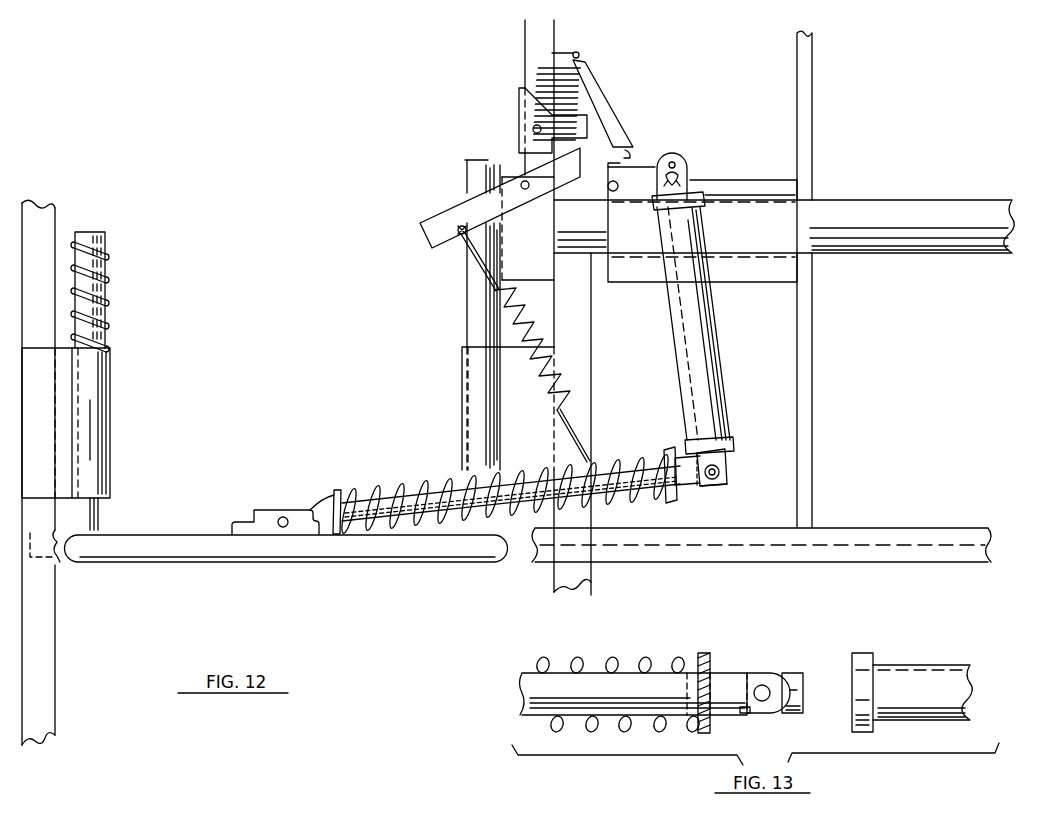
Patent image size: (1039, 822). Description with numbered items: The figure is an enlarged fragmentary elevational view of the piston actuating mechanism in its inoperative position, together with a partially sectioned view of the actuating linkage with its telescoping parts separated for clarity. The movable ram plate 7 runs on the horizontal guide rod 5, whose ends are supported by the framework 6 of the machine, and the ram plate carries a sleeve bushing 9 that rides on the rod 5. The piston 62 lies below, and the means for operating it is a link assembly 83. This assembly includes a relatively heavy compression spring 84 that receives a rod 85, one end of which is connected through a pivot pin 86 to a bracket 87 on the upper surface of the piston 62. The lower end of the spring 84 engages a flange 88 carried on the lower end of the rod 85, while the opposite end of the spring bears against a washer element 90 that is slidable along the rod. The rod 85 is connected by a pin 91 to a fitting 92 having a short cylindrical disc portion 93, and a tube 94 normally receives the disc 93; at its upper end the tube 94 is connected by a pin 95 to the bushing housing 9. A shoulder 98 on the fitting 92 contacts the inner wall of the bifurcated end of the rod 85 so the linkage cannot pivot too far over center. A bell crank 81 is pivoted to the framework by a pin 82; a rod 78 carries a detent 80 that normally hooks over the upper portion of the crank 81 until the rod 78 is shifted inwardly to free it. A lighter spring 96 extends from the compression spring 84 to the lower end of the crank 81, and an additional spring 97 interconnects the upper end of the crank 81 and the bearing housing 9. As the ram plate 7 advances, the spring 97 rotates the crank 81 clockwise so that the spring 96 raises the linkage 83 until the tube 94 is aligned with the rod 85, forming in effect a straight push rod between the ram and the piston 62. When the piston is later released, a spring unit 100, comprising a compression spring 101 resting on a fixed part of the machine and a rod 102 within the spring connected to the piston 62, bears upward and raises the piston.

In FIG. 12, the guide rod 5 is at (880, 213).
In FIG. 12, the framework 6 is at (532, 260).
In FIG. 12, the ram plate 7 is at (803, 87).
In FIG. 12, the sleeve bushing 9 is at (740, 178).
In FIG. 12, the piston 62 is at (208, 547).
In FIG. 12, the rod 78 is at (533, 128).
In FIG. 12, the detent 80 is at (532, 105).
In FIG. 12, the bell crank 81 is at (455, 198).
In FIG. 12, the pin 82 is at (525, 189).
In FIG. 12, the link assembly 83 is at (733, 412).
In FIG. 13, the link assembly 83 is at (840, 638).
In FIG. 12, the compression spring 84 is at (547, 473).
In FIG. 13, the compression spring 84 is at (578, 653).
In FIG. 12, the rod 85 is at (405, 487).
In FIG. 13, the rod 85 is at (517, 680).
In FIG. 12, the pivot pin 86 is at (286, 517).
In FIG. 12, the bracket 87 is at (245, 525).
In FIG. 12, the flange 88 is at (336, 495).
In FIG. 12, the washer element 90 is at (668, 450).
In FIG. 12, the pin 91 is at (719, 472).
In FIG. 13, the pin 91 is at (760, 686).
In FIG. 12, the fitting 92 is at (710, 488).
In FIG. 13, the fitting 92 is at (762, 717).
In FIG. 13, the cylindrical disc portion 93 is at (793, 680).
In FIG. 12, the tube 94 is at (697, 303).
In FIG. 13, the tube 94 is at (900, 680).
In FIG. 12, the pin 95 is at (673, 170).
In FIG. 12, the spring 96 is at (515, 347).
In FIG. 12, the spring 97 is at (613, 100).
In FIG. 12, the shoulder 98 is at (684, 486).
In FIG. 13, the shoulder 98 is at (750, 714).
In FIG. 12, the spring unit 100 is at (115, 393).
In FIG. 12, the compression spring 101 is at (103, 280).
In FIG. 12, the rod 102 is at (95, 508).